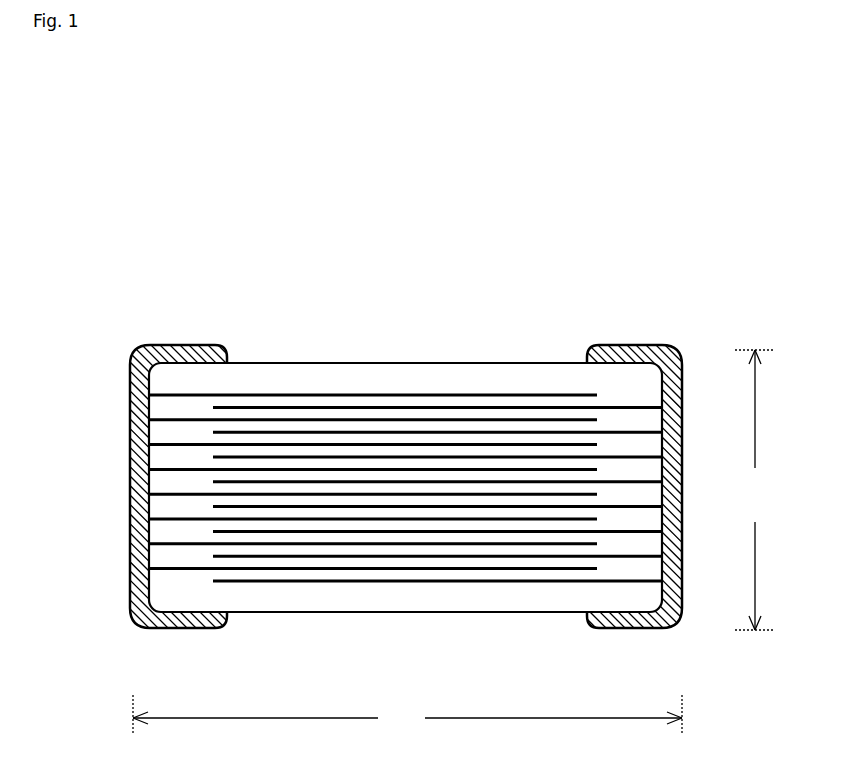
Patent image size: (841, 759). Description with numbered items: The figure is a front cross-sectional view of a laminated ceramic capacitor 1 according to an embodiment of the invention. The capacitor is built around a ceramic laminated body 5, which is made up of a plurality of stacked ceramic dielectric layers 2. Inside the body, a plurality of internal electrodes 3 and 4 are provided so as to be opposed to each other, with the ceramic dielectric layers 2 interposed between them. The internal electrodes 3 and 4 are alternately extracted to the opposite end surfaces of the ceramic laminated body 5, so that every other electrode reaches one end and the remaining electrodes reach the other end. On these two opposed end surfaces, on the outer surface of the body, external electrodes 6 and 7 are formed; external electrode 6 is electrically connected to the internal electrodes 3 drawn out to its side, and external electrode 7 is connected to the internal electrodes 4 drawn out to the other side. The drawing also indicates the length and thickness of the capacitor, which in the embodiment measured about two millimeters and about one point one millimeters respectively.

The laminated ceramic capacitor 1 is at (438, 322).
The ceramic dielectric layers 2 is at (538, 462).
The internal electrode 3 is at (252, 494).
The internal electrode 4 is at (312, 456).
The ceramic laminated body 5 is at (347, 355).
The external electrode 6 is at (130, 484).
The external electrode 7 is at (682, 428).